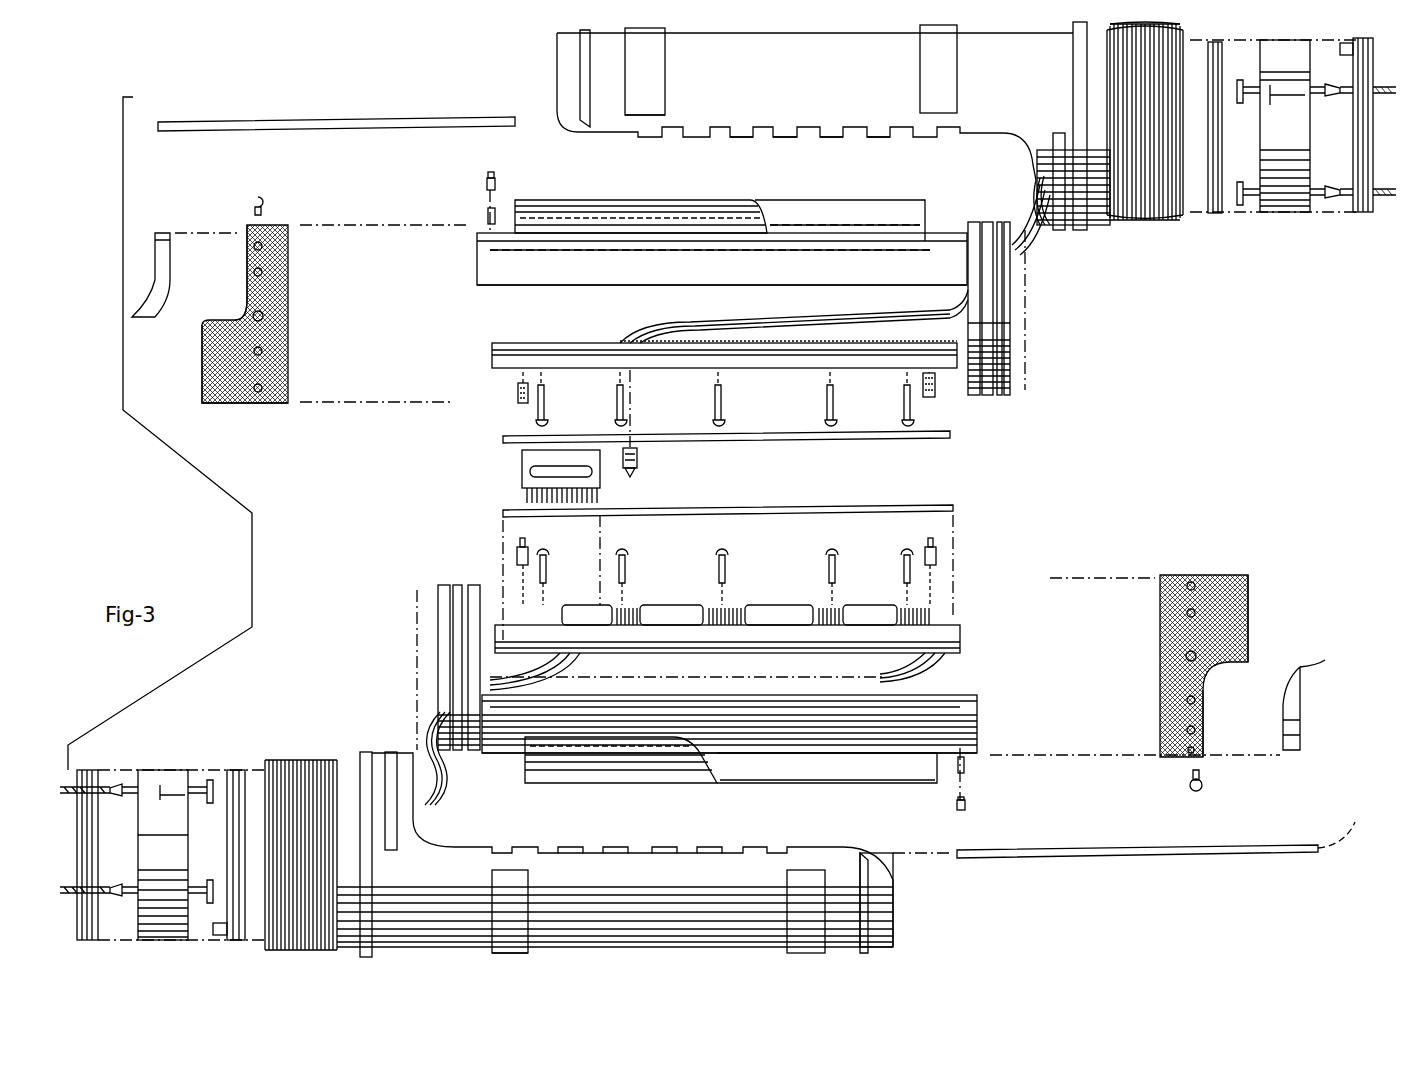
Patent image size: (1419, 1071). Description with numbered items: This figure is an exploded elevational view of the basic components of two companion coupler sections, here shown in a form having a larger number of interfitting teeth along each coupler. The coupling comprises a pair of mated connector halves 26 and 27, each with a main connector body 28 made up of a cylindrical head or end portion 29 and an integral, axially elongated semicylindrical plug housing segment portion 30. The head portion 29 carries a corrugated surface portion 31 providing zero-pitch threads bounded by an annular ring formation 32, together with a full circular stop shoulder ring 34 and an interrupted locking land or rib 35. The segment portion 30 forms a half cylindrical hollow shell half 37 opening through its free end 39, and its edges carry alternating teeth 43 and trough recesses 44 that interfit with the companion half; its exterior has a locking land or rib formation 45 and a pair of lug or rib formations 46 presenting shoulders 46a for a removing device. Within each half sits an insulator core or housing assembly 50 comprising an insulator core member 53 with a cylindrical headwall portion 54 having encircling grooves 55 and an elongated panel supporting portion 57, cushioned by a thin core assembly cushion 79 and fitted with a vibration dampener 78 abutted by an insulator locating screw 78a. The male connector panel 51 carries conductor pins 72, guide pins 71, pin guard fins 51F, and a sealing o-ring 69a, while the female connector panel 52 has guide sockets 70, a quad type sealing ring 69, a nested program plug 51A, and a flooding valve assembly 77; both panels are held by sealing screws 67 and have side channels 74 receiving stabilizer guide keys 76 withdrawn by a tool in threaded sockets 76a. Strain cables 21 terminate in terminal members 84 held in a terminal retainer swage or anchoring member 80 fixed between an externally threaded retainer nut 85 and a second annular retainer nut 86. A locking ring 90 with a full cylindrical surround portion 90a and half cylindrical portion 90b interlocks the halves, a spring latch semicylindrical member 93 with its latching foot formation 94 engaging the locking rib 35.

The strain cable 21 is at (1393, 97).
The connector half 26 is at (828, 14).
The connector half 27 is at (692, 960).
The main connector body 28 is at (748, 38).
The cylindrical head or end portion 29 is at (1080, 244).
The semicylindrical plug housing segment portion 30 is at (452, 848).
The corrugated surface portion 31 is at (1160, 30).
The annular ring formation 32 is at (1118, 226).
The full circular stop shoulder ring 34 is at (1073, 26).
The interrupted locking land or rib 35 is at (1060, 232).
The half cylindrical hollow concave shell half 37 is at (600, 135).
The free end 39 is at (557, 66).
The teeth 43 is at (800, 136).
The trough recesses 44 is at (900, 136).
The locking land or rib formation 45 is at (578, 126).
The lug or shoulder-forming rib formations 46 is at (640, 26).
The shoulders 46a is at (652, 116).
The insulator core or housing assembly 50 is at (468, 283).
The male connector panel or plate 51 is at (962, 632).
The program plug 51A is at (521, 470).
The pin guard fins 51F is at (778, 605).
The female connector panel or plate 52 is at (490, 355).
The insulator core member 53 is at (1003, 371).
The cylindrical headwall portion 54 is at (1003, 327).
The transverse encircling grooves 55 is at (993, 398).
The segmental cylindrical panel supporting portion 57 is at (772, 278).
The sealing screws 67 is at (827, 404).
The quad type sealing ring 69 is at (750, 440).
The sealing o-ring 69a is at (808, 508).
The guide sockets 70 is at (518, 394).
The guide pins 71 is at (935, 555).
The conductor pins 72 is at (936, 600).
The channels 74 is at (543, 344).
The stabilizer guide keys 76 is at (345, 118).
The internally threaded socket 76a is at (1350, 826).
The flooding valve assembly 77 is at (638, 462).
The vibration dampener 78 is at (487, 213).
The insulator locating screw 78a is at (488, 176).
The core assembly cushion 79 is at (760, 200).
The terminal retainer swage or anchoring member 80 is at (1290, 214).
The terminal members 84 is at (1242, 206).
The externally threaded retainer nut 85 is at (1215, 215).
The second annular retainer nut 86 is at (1366, 214).
The locking ring 90 is at (270, 403).
The full cylindrical surround portion 90a is at (290, 274).
The half cylindrical portion 90b is at (202, 370).
The spring latch semicylindrical member 93 is at (168, 272).
The latching foot formation 94 is at (1310, 673).